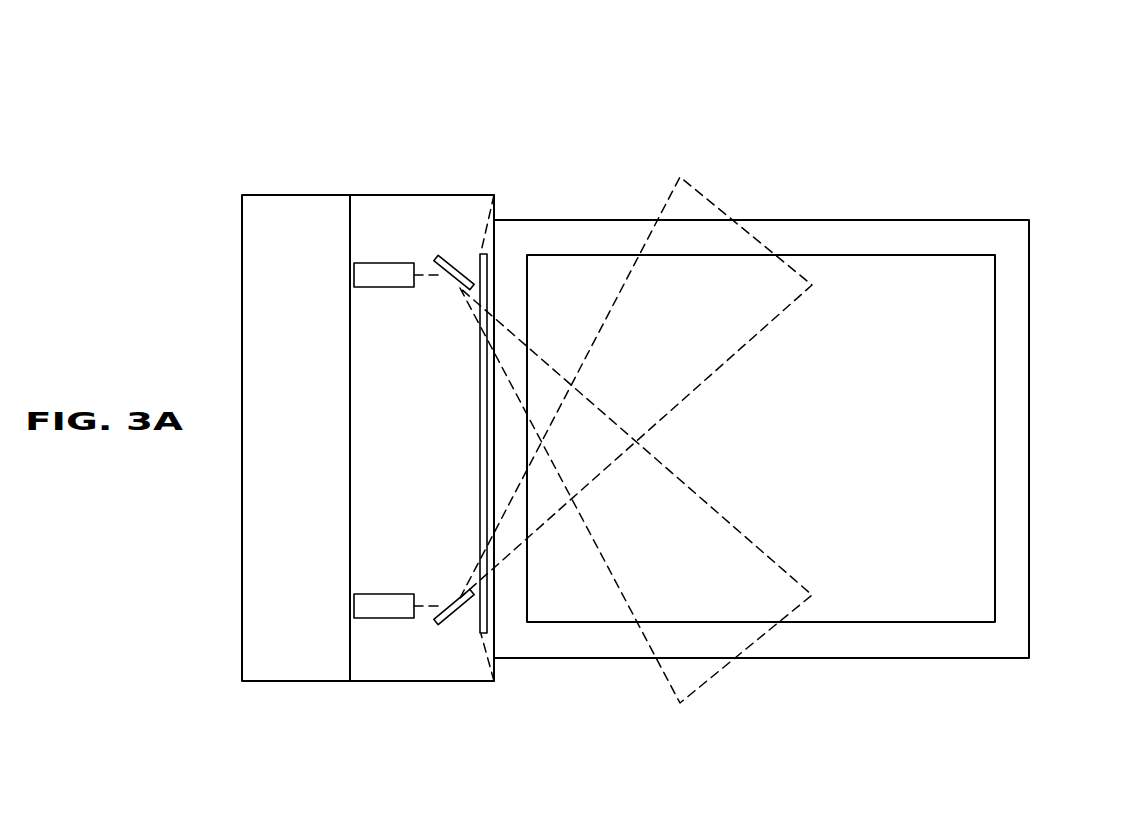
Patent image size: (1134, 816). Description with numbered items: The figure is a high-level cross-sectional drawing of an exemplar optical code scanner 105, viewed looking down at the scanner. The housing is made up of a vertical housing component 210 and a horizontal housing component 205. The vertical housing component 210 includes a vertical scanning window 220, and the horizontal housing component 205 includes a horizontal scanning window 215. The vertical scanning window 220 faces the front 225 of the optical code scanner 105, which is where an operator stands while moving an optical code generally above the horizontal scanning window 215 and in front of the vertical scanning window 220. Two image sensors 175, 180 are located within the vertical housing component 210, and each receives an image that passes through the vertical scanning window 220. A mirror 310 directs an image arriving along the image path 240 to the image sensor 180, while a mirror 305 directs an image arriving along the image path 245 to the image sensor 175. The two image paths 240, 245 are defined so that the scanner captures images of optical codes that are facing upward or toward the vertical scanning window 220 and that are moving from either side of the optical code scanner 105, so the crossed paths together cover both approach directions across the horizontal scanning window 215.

The optical code scanner 105 is at (428, 74).
The vertical housing component 210 is at (403, 192).
The horizontal housing component 205 is at (1013, 267).
The horizontal scanning window 215 is at (952, 267).
The front 225 is at (1030, 497).
The image sensor 175 is at (384, 288).
The image sensor 180 is at (380, 594).
The mirror 305 is at (452, 258).
The mirror 310 is at (454, 617).
The vertical scanning window 220 is at (480, 510).
The image path 240 is at (773, 318).
The image path 245 is at (750, 537).